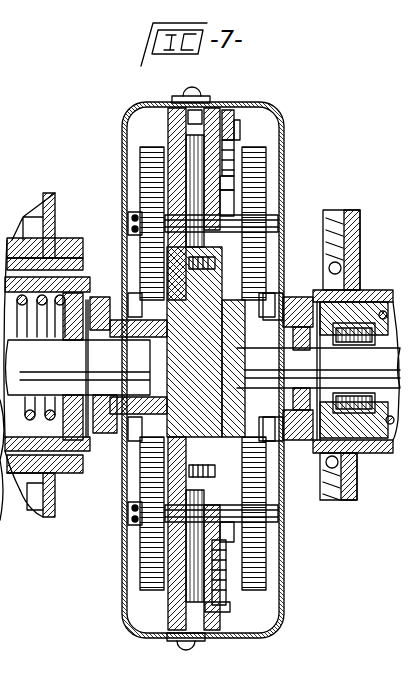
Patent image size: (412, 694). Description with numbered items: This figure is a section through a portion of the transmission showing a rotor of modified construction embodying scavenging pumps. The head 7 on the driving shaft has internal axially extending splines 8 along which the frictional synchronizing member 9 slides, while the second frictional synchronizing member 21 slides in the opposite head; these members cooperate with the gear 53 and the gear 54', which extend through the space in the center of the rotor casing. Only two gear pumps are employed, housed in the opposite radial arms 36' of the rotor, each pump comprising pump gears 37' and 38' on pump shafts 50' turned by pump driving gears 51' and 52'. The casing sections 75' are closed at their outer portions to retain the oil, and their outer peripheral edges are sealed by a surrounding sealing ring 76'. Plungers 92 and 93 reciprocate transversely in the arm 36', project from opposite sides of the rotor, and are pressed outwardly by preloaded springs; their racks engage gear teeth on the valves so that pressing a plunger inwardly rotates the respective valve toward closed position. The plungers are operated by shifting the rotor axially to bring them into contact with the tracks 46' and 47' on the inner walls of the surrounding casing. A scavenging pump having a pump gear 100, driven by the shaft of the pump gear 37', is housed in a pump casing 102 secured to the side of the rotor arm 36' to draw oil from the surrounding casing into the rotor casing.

The head 7 is at (373, 290).
The internal axially extending splines 8 is at (236, 94).
The frictional synchronizing member 9 is at (367, 428).
The frictional synchronizing member 21 is at (70, 340).
The radial arm 36' is at (317, 368).
The pump gear 37' is at (179, 369).
The pump gear 38' is at (182, 375).
The track 46' is at (58, 356).
The track 47' is at (324, 355).
The pump shaft 50' is at (282, 368).
The pump driving gear 51' is at (266, 158).
The pump driving gear 52' is at (123, 367).
The gear 53 is at (297, 433).
The gear 54' is at (62, 401).
The casing section 75' is at (197, 362).
The sealing ring 76' is at (193, 358).
The plunger 92 is at (300, 300).
The plunger 93 is at (95, 455).
The pump gear 100 is at (233, 153).
The pump casing 102 is at (232, 157).